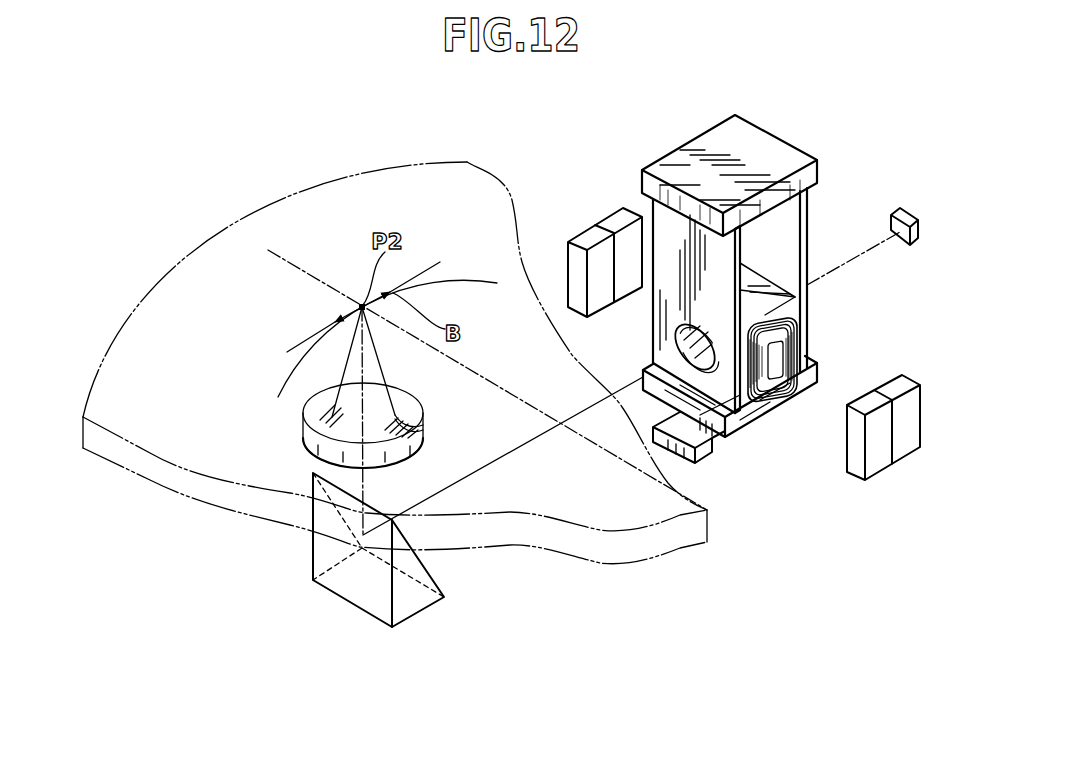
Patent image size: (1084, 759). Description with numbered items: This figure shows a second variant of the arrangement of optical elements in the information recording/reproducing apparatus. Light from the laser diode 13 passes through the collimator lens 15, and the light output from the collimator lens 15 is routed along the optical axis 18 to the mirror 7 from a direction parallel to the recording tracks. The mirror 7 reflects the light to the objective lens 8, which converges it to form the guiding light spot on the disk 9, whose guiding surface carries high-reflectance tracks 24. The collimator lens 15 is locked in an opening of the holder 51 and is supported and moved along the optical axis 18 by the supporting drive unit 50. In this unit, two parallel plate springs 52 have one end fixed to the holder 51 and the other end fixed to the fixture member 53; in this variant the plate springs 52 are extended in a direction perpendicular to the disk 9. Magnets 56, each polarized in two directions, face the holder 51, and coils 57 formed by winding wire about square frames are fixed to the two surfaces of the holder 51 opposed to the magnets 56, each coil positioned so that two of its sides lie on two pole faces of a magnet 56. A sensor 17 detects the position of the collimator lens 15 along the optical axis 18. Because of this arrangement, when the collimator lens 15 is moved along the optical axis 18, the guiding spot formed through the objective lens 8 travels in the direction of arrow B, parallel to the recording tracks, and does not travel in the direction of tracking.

The mirror 7 is at (418, 603).
The objective lens 8 is at (303, 440).
The disk 9 is at (466, 183).
The laser diode 13 is at (907, 210).
The collimator lens 15 is at (676, 338).
The sensor 17 is at (708, 453).
The optical axis 18 is at (862, 253).
The tracks 24 is at (478, 285).
The supporting drive unit 50 is at (792, 490).
The holder 51 is at (747, 413).
The plate springs 52 is at (740, 252).
The fixture member 53 is at (768, 157).
The magnets 56 is at (568, 265).
The coils 57 is at (800, 345).